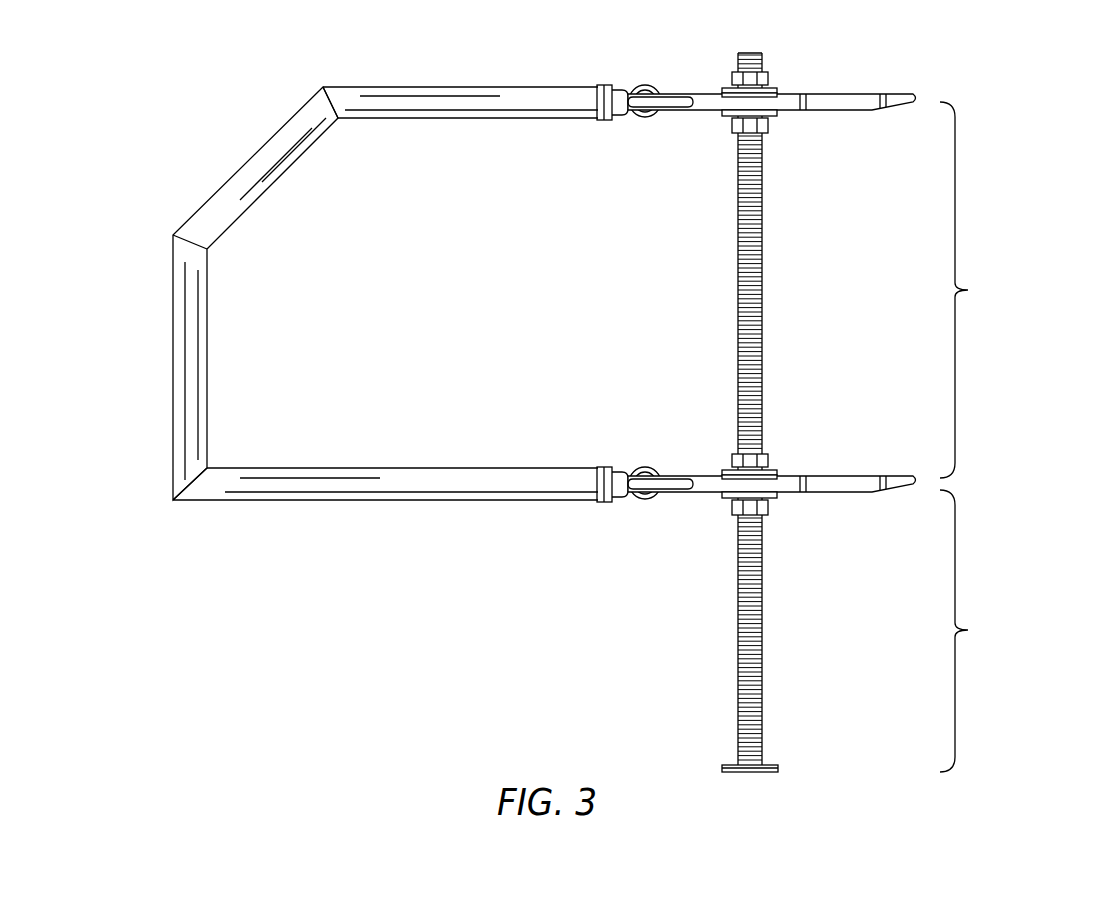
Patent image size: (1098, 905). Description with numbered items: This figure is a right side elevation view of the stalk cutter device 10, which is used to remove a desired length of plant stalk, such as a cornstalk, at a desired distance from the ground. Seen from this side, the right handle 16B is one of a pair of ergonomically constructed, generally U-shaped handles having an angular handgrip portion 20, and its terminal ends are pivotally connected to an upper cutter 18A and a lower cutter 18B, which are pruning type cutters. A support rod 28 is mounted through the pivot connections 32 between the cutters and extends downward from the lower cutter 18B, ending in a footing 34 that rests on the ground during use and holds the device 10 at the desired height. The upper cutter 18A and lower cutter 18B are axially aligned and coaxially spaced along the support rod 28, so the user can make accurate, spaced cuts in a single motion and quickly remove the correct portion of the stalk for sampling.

The stalk cutter device 10 is at (1005, 74).
The angular handgrip portion 20 is at (288, 137).
The right handle 16B is at (501, 105).
The upper cutter 18A is at (826, 95).
The lower cutter 18B is at (826, 477).
The support rod 28 is at (750, 333).
The pivot connections 32 is at (740, 105).
The footing 34 is at (727, 772).